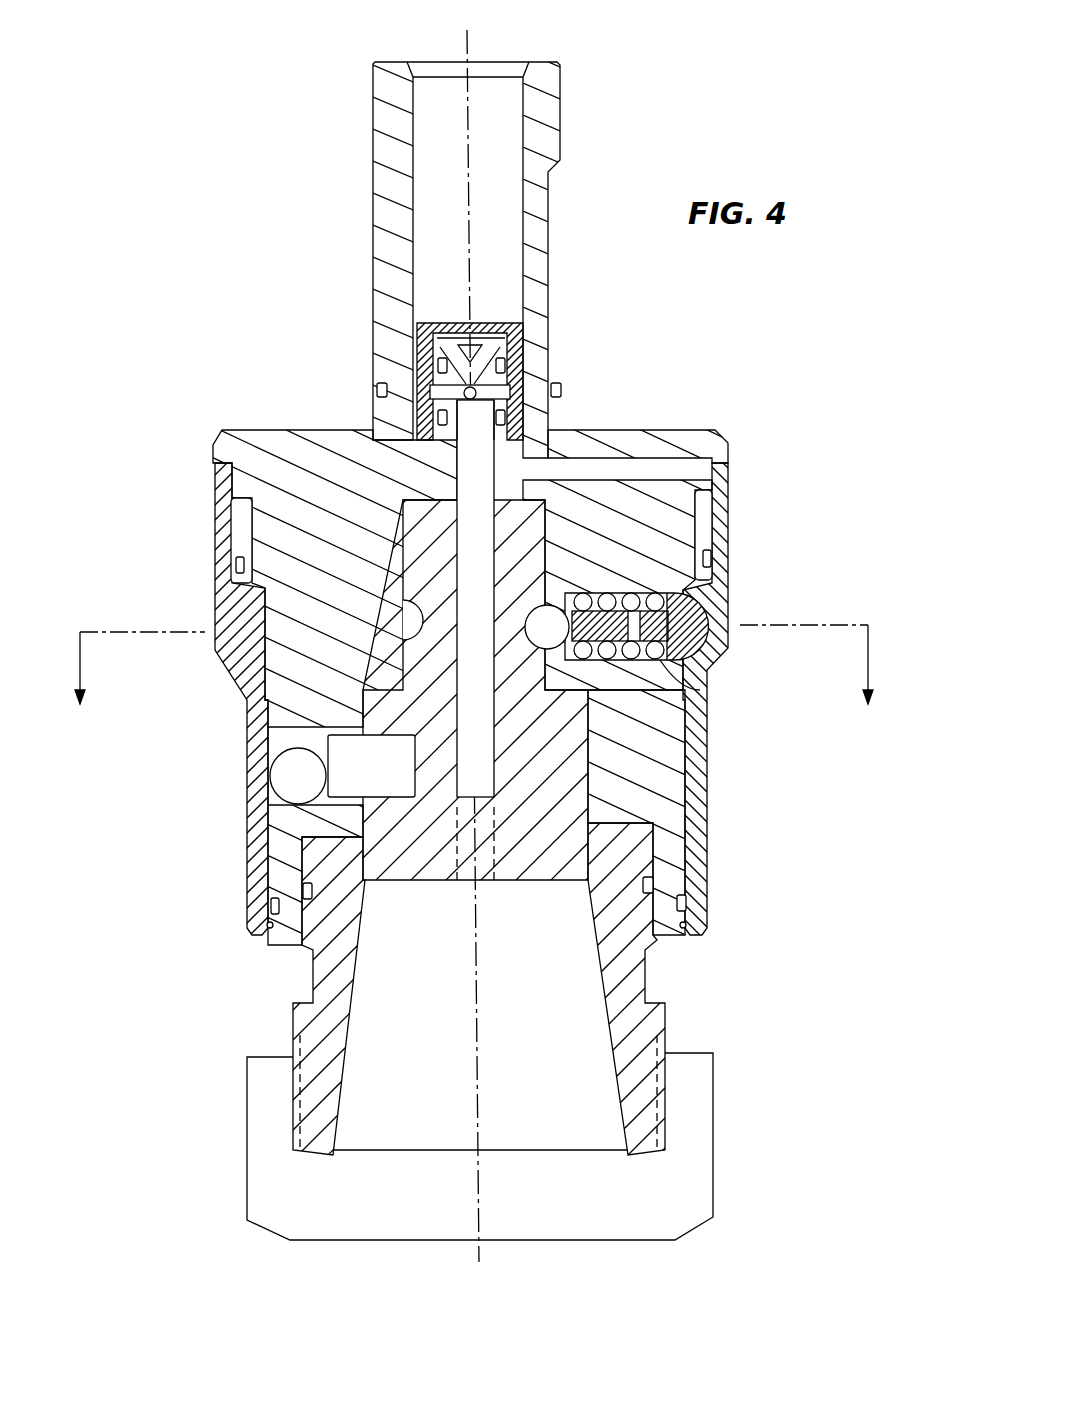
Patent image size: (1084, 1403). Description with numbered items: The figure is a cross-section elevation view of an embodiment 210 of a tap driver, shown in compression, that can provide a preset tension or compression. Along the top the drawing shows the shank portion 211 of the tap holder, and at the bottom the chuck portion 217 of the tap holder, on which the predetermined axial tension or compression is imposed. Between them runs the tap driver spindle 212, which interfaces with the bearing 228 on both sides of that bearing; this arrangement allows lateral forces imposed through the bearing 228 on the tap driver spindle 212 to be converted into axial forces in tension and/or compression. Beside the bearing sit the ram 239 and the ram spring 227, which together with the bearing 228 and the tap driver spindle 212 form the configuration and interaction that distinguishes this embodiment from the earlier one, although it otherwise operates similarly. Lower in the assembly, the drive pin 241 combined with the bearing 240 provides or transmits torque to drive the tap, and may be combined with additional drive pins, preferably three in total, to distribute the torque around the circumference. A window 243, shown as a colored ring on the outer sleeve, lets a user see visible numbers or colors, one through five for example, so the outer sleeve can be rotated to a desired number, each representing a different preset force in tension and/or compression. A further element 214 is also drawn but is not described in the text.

The embodiment 210 is at (205, 130).
The shank portion 211 is at (547, 117).
The tap driver spindle 212 is at (415, 530).
The retainer nut 214 is at (707, 680).
The chuck portion 217 is at (410, 1107).
The ram spring 227 is at (605, 655).
The bearing 228 is at (550, 627).
The ram 239 is at (668, 665).
The bearing 240 is at (300, 775).
The drive pin 241 is at (384, 777).
The window 243 is at (243, 517).